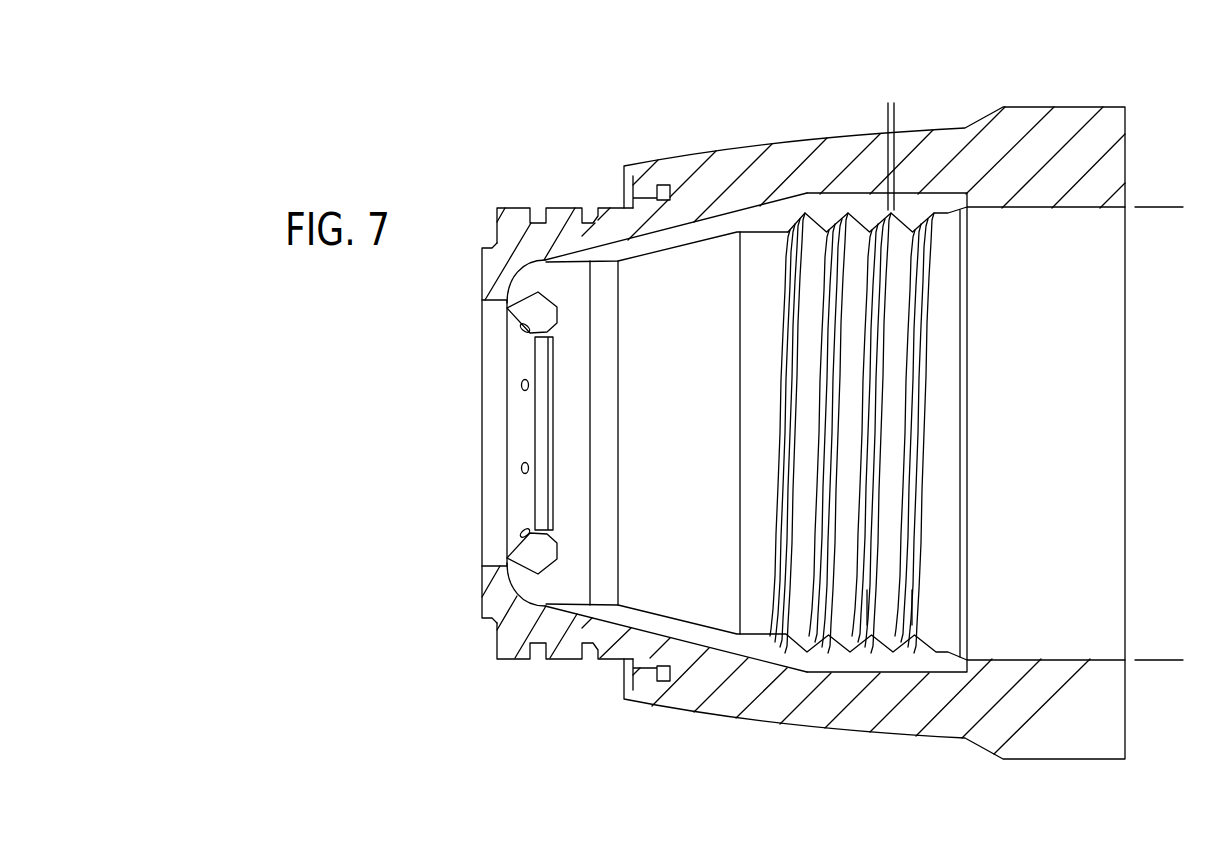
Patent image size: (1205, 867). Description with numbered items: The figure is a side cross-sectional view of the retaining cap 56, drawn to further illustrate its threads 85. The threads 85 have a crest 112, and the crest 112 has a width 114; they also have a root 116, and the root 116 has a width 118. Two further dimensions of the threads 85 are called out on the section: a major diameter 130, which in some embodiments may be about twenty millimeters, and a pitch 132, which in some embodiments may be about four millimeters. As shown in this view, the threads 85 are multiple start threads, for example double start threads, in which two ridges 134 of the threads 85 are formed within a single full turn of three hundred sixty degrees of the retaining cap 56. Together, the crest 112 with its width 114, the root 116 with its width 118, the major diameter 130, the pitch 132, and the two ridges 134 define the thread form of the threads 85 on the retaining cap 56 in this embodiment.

The retaining cap 56 is at (948, 88).
The threads 85 is at (828, 218).
The crest 112 is at (826, 232).
The width 114 is at (828, 247).
The root 116 is at (893, 222).
The width 118 is at (866, 110).
The major diameter 130 is at (1168, 207).
The pitch 132 is at (867, 605).
The ridges 134 is at (833, 348).